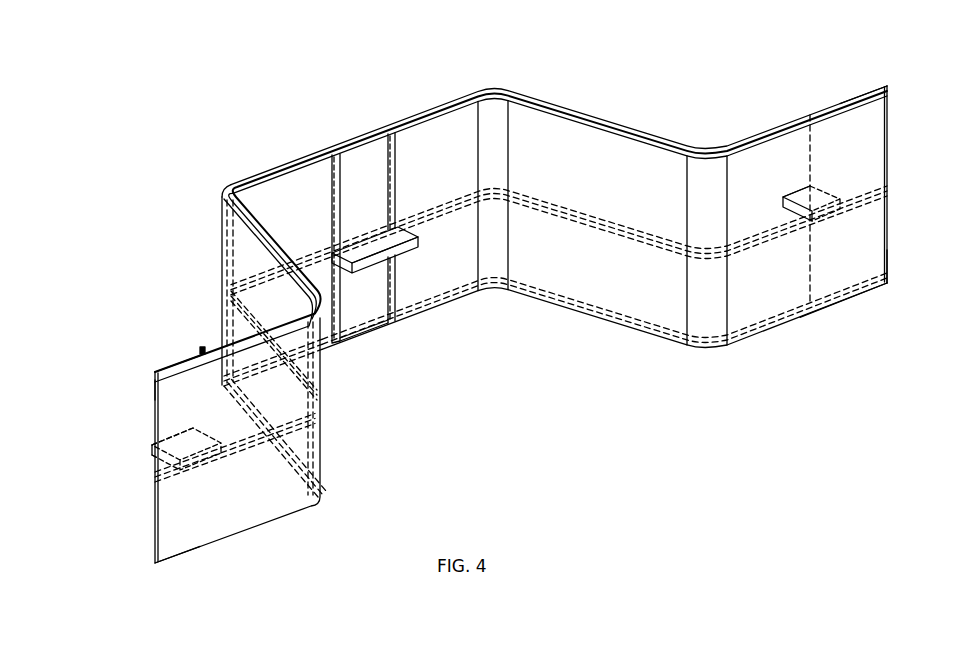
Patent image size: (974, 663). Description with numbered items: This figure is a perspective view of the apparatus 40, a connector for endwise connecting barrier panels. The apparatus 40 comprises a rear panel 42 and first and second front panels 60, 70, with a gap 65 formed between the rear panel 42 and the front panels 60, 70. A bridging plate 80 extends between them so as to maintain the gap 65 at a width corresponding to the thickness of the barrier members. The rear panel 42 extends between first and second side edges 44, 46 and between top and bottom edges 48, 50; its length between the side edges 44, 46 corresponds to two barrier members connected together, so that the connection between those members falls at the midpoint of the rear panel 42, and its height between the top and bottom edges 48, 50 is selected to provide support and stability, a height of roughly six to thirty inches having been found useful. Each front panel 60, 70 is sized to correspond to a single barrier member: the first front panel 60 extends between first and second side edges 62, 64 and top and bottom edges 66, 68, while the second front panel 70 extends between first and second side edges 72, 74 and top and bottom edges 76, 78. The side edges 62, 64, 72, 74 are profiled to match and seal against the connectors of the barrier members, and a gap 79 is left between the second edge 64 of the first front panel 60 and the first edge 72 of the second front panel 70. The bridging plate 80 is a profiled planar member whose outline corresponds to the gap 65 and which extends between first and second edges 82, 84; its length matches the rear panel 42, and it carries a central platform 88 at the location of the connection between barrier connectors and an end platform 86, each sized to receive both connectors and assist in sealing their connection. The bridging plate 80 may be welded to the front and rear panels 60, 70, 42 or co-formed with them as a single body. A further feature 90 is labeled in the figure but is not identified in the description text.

The apparatus 40 is at (697, 43).
The rear panel 42 is at (389, 122).
The first side edge 44 is at (813, 112).
The second side edge 46 is at (203, 350).
The top edge 48 is at (268, 166).
The bottom edge 50 is at (363, 327).
The first front panel 60 is at (173, 502).
The first side edge 62 is at (153, 394).
The second side edge 64 is at (340, 343).
The gap 65 is at (441, 102).
The top edge 66 is at (160, 372).
The bottom edge 68 is at (190, 553).
The second front panel 70 is at (847, 297).
The first side edge 72 is at (386, 158).
The second side edge 74 is at (890, 152).
The top edge 76 is at (872, 92).
The bottom edge 78 is at (875, 287).
The gap 79 is at (387, 331).
The bridging plate 80 is at (365, 235).
The first edge 82 is at (153, 458).
The second edge 84 is at (840, 205).
The end platform 86 is at (157, 443).
The central platform 88 is at (395, 238).
The tab surface 90 is at (823, 197).